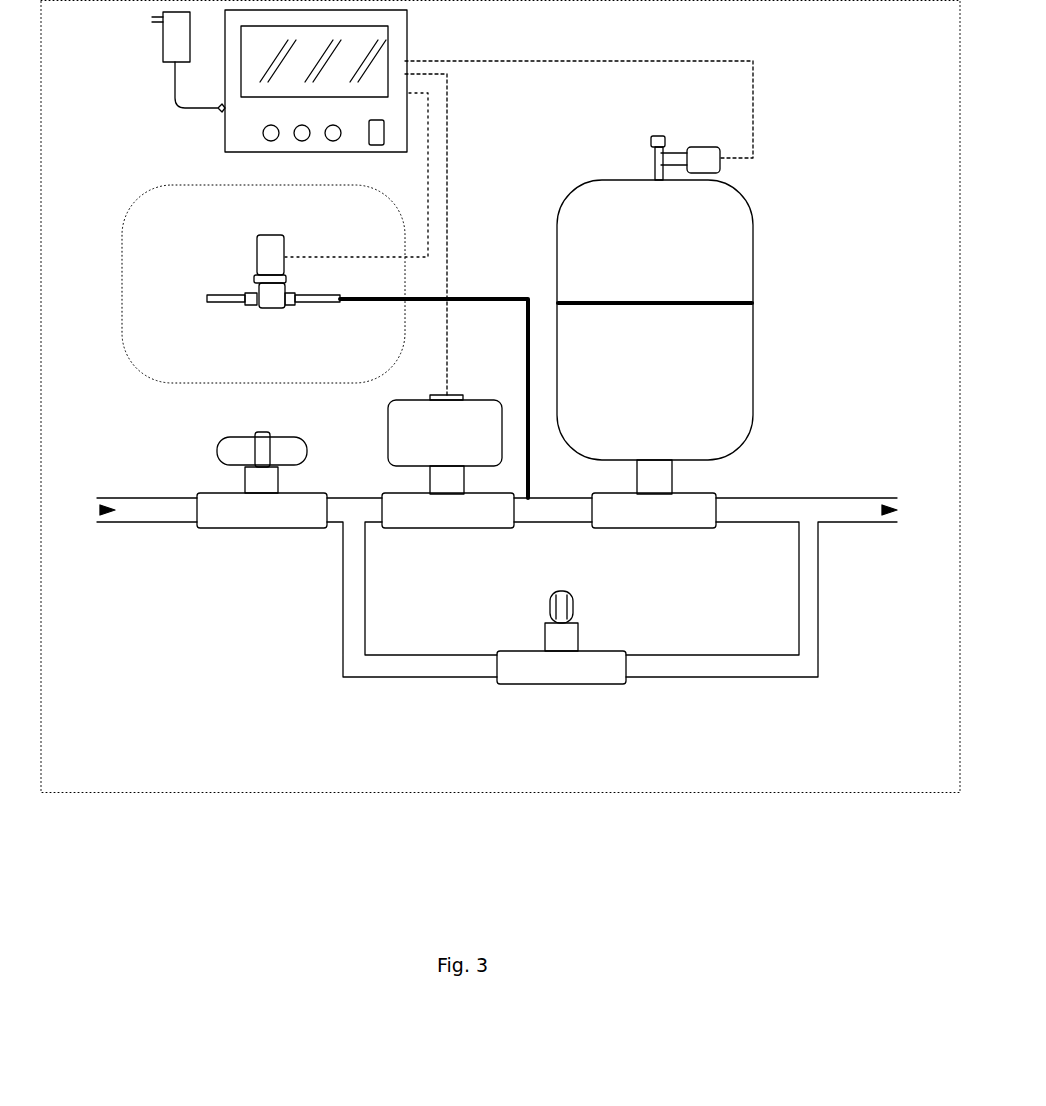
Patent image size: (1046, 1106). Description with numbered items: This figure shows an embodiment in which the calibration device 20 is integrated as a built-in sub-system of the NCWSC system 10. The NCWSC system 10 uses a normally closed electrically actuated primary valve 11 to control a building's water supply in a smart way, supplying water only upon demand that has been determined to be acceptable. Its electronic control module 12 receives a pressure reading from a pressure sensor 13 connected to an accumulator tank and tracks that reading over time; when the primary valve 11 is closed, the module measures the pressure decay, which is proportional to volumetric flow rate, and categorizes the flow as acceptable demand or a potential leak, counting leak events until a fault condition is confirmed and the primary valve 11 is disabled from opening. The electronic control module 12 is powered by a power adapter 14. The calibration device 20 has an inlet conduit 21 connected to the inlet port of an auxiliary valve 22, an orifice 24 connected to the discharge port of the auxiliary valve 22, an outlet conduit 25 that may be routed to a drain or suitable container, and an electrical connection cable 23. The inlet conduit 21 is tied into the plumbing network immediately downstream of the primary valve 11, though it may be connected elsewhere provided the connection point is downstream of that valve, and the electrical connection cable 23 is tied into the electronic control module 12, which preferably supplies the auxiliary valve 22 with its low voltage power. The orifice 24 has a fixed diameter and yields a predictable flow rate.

The NCWSC system 10 is at (848, 728).
The primary valve 11 is at (472, 392).
The electronic control module 12 is at (412, 33).
The pressure sensor 13 is at (728, 174).
The power adapter 14 is at (160, 48).
The calibration device 20 is at (323, 295).
The inlet conduit 21 is at (338, 306).
The auxiliary valve 22 is at (255, 252).
The electrical connection cable 23 is at (318, 257).
The orifice 24 is at (252, 306).
The outlet conduit 25 is at (205, 298).